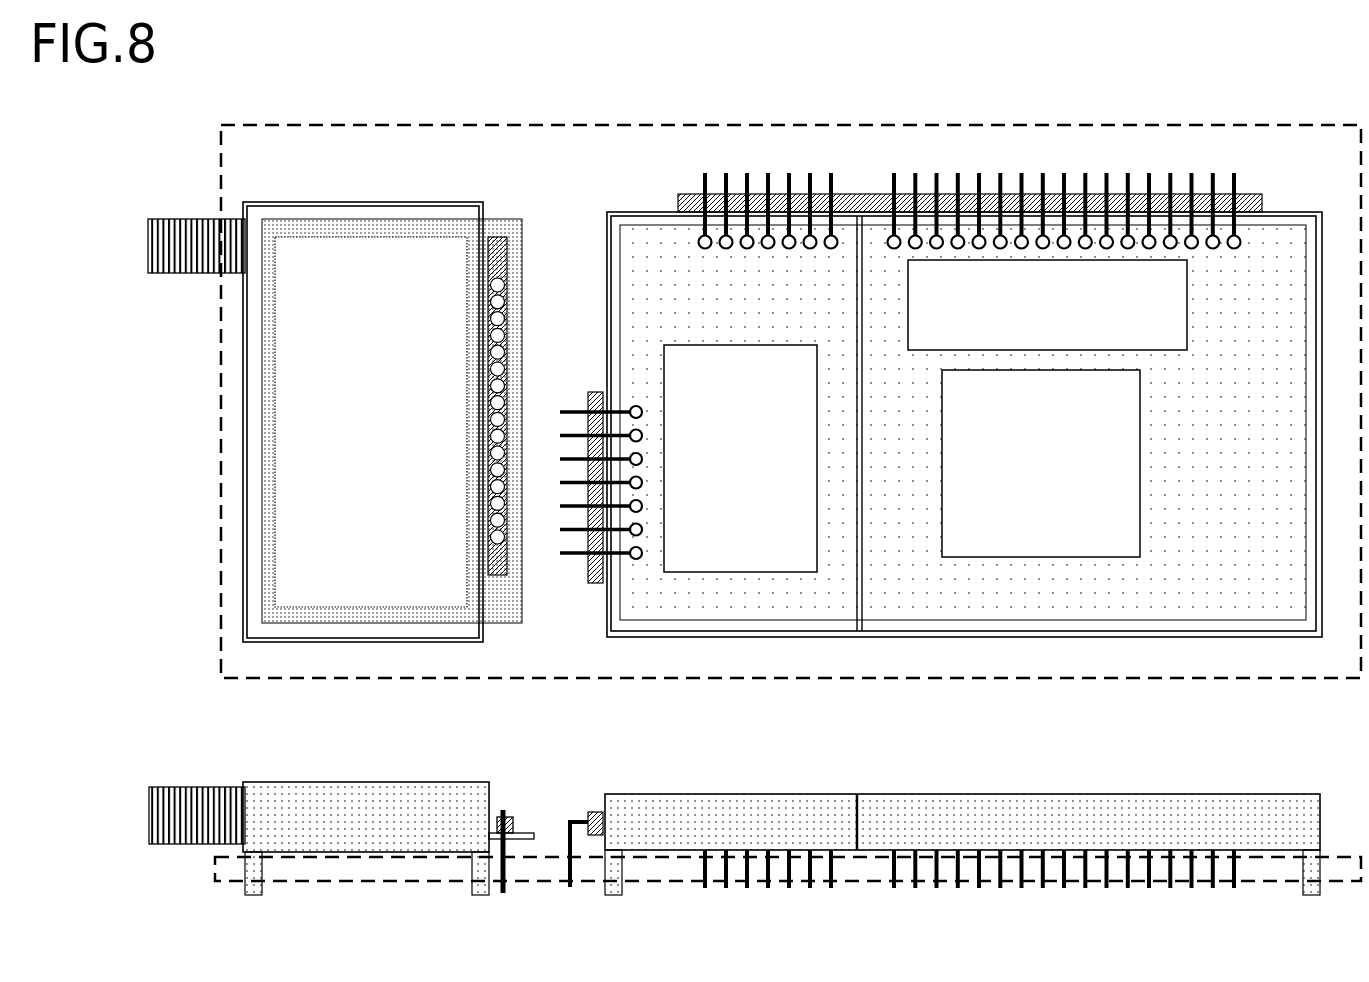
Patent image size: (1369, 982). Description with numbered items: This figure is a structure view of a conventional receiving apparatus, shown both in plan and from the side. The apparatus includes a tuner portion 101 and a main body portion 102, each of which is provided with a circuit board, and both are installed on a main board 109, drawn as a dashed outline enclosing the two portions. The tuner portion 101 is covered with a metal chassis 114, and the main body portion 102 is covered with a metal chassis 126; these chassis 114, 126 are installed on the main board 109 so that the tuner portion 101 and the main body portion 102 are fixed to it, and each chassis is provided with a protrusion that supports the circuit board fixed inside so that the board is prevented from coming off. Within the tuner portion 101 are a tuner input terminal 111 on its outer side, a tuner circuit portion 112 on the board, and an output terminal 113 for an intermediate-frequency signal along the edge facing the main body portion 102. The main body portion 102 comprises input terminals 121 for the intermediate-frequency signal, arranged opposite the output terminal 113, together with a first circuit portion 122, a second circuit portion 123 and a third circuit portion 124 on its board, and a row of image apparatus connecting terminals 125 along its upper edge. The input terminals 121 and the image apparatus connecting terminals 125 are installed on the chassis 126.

The tuner portion 101 is at (415, 514).
The main body portion 102 is at (929, 514).
The main board 109 is at (221, 485).
The tuner input terminal 111 is at (170, 220).
The tuner circuit portion 112 is at (455, 597).
The output terminal 113 is at (500, 540).
The metal chassis 114 is at (457, 200).
The input terminals 121 is at (578, 405).
The first circuit portion 122 is at (753, 345).
The second circuit portion 123 is at (1140, 455).
The third circuit portion 124 is at (1187, 293).
The image apparatus connecting terminals 125 is at (1234, 180).
The metal chassis 126 is at (607, 248).